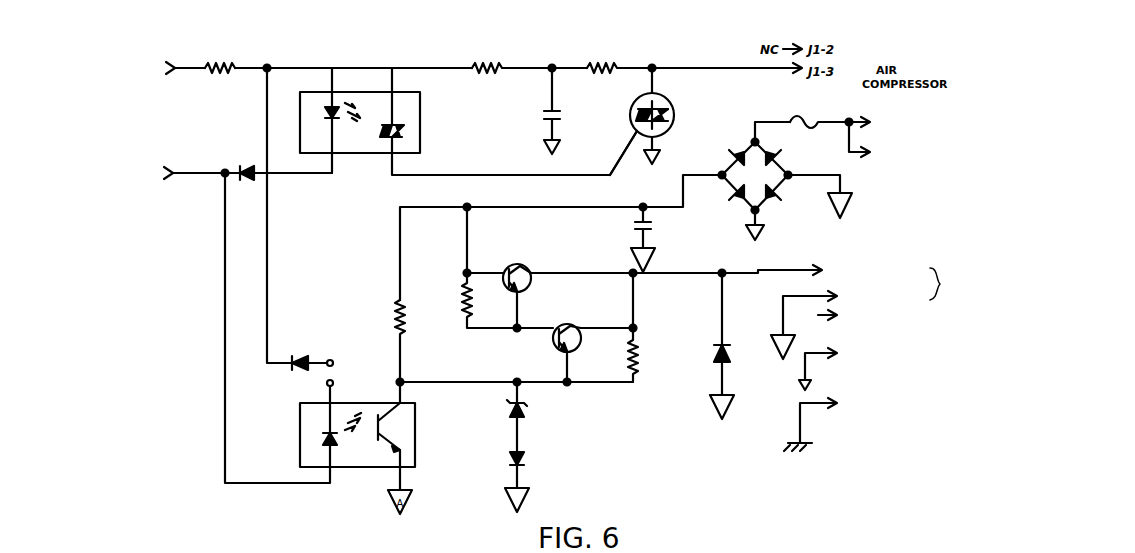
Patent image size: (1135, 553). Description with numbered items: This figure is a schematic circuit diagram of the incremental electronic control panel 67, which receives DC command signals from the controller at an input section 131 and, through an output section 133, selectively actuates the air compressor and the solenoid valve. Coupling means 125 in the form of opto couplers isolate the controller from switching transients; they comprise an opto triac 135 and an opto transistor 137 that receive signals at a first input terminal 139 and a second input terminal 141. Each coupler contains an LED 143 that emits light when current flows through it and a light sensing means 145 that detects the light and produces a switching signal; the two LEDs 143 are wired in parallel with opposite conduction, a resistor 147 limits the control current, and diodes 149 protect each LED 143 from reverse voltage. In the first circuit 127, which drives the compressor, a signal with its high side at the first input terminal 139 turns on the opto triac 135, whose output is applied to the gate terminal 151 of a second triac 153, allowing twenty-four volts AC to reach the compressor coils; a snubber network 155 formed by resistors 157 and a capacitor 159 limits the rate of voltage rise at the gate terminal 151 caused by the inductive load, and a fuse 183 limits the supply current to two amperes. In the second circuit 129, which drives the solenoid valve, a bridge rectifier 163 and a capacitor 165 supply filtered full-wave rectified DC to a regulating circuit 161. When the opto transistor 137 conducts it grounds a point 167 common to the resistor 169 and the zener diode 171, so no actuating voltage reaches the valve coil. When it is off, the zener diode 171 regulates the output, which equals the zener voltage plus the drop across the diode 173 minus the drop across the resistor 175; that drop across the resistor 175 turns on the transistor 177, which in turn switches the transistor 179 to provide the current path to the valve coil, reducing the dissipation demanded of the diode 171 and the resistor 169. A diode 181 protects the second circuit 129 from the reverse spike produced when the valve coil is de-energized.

The first input terminal 139 is at (179, 66).
The resistor 147 is at (238, 65).
The input section 131 is at (197, 118).
The second input terminal 141 is at (175, 176).
The diodes 149 is at (246, 178).
The coupling means 125 is at (368, 175).
The opto triac 135 is at (358, 92).
The LED 143 is at (326, 104).
The light sensing means 145 is at (402, 124).
The opto transistor 137 is at (362, 392).
The snubber network 155 is at (530, 91).
The resistors 157 is at (583, 64).
The capacitor 159 is at (556, 111).
The second triac 153 is at (668, 98).
The gate terminal 151 is at (641, 143).
The first circuit 127 is at (733, 136).
The bridge rectifier 163 is at (762, 212).
The fuse 183 is at (793, 118).
The output section 133 is at (897, 215).
The capacitor 165 is at (640, 226).
The resistor 169 is at (404, 306).
The regulating circuit 161 is at (498, 365).
The transistor 179 is at (527, 285).
The transistor 177 is at (572, 350).
The resistor 175 is at (636, 349).
The point 167 is at (404, 380).
The zener diode 171 is at (510, 408).
The diode 173 is at (522, 455).
The second circuit 129 is at (690, 303).
The diode 181 is at (727, 352).
The incremental electronic control panel 67 is at (664, 417).